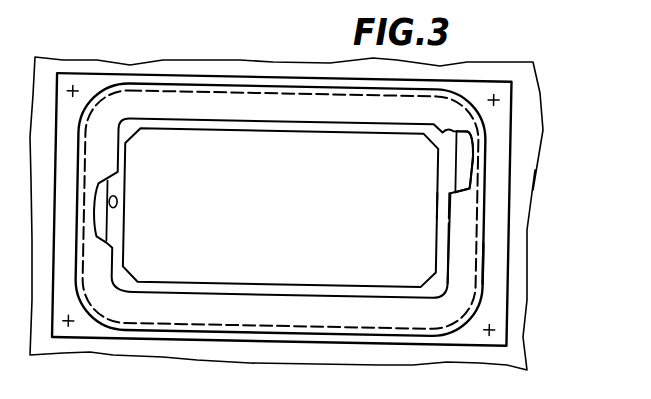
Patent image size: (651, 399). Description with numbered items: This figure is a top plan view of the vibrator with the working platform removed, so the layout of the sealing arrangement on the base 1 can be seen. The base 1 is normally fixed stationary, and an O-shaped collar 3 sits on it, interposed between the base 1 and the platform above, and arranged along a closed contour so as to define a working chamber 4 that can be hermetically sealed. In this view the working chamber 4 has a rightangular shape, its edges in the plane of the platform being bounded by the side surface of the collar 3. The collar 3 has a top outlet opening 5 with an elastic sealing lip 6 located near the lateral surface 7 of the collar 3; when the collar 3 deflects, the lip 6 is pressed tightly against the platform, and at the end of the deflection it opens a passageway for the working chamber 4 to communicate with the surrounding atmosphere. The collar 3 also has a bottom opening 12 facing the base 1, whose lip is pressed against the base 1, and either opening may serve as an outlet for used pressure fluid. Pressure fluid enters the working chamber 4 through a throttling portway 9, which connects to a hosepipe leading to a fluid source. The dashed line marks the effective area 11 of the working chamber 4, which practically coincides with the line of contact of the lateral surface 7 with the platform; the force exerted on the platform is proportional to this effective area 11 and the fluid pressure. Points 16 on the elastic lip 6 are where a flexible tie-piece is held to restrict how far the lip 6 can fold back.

The base 1 is at (83, 86).
The collar 3 is at (103, 115).
The working chamber 4 is at (128, 134).
The outlet opening 5 is at (164, 123).
The elastic sealing lip 6 is at (448, 232).
The lateral surface 7 is at (484, 268).
The throttling portway 9 is at (118, 206).
The effective area 11 is at (191, 94).
The bottom opening 12 is at (454, 159).
The points 16 is at (462, 202).